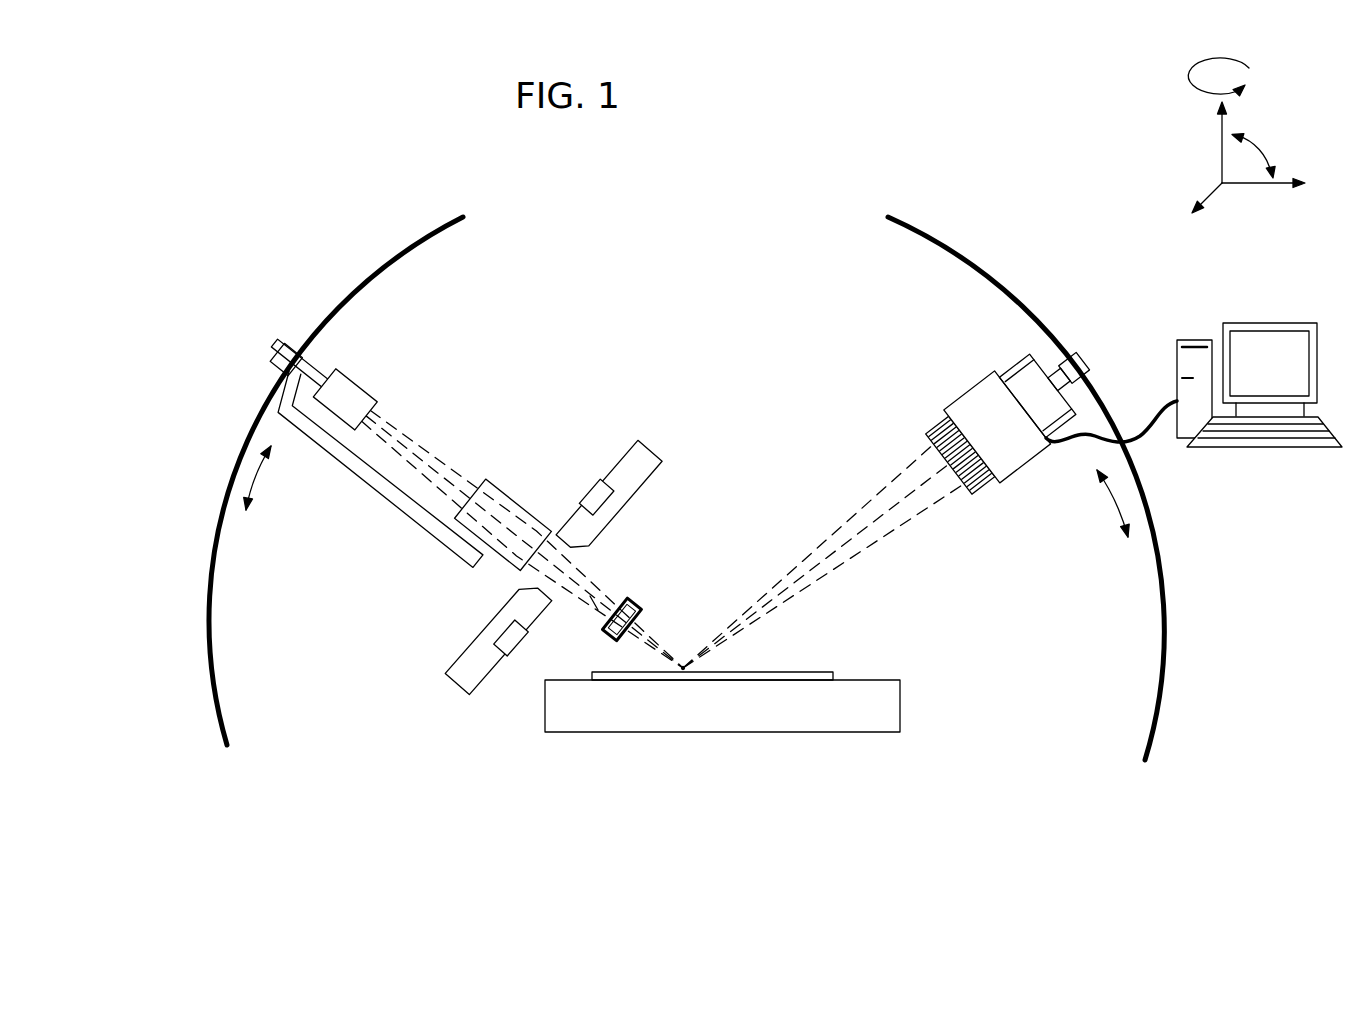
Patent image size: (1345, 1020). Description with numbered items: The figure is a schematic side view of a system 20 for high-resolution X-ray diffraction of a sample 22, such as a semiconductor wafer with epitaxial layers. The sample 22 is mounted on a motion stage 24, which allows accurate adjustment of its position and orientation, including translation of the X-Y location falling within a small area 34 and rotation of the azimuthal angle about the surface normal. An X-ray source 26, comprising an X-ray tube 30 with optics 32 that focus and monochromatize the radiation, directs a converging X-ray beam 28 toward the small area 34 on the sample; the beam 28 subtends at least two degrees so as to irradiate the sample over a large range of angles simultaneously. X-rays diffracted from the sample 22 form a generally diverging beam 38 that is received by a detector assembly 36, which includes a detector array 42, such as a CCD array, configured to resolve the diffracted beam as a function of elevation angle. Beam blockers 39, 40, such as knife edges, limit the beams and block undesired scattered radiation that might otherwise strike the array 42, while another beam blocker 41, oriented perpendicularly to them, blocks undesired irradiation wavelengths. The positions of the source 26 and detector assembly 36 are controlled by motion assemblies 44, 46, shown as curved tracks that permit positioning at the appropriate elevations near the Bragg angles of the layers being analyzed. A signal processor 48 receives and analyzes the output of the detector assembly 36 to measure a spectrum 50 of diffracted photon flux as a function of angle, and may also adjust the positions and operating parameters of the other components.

The system 20 is at (356, 196).
The sample 22 is at (823, 672).
The motion stage 24 is at (900, 710).
The X-ray source 26 is at (383, 467).
The converging X-ray beam 28 is at (593, 603).
The X-ray tube 30 is at (345, 399).
The optics 32 is at (503, 524).
The small area 34 is at (683, 670).
The detector assembly 36 is at (973, 447).
The diverging beam 38 is at (524, 541).
The beam blocker 39 is at (452, 687).
The beam blocker 40 is at (660, 460).
The beam blocker 41 is at (621, 619).
The detector array 42 is at (827, 557).
The motion assembly 44 is at (299, 369).
The motion assembly 46 is at (1157, 546).
The signal processor 48 is at (1177, 382).
The spectrum 50 is at (1250, 353).